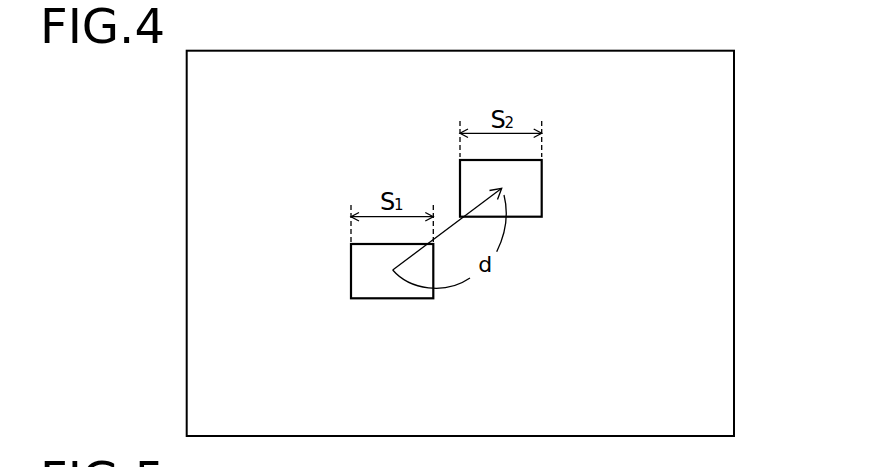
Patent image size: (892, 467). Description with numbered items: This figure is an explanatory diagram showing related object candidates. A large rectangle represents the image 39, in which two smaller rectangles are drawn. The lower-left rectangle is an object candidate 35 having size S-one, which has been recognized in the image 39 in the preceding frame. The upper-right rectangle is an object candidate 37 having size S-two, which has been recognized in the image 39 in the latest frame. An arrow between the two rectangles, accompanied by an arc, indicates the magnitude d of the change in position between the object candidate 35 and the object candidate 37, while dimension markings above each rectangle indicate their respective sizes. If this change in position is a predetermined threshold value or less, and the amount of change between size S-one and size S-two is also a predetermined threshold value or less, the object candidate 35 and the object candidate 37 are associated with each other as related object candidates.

The object candidate 35 is at (351, 268).
The object candidate 37 is at (542, 183).
The image 39 is at (734, 199).